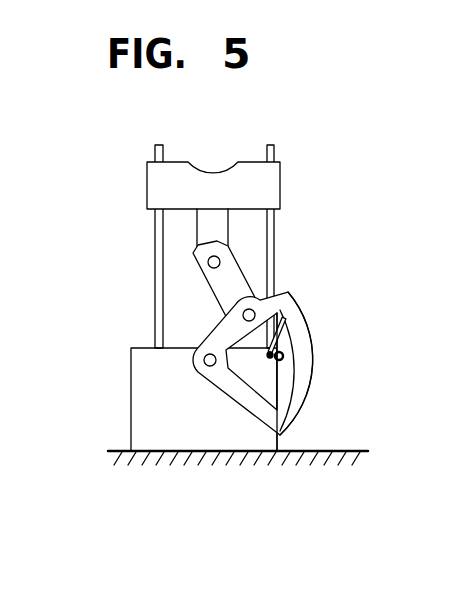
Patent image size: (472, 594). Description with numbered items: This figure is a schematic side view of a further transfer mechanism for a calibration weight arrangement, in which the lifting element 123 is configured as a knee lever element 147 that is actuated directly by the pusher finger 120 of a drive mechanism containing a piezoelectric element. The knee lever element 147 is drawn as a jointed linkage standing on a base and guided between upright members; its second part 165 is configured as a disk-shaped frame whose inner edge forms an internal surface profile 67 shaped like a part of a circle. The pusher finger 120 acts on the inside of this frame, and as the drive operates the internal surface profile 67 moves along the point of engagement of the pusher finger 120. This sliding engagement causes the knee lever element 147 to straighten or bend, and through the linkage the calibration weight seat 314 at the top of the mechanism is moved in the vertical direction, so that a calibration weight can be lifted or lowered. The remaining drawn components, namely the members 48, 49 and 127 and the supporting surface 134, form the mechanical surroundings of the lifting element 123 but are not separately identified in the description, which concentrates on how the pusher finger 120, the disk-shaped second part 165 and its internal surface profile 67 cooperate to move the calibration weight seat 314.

The calibration weight seat 314 is at (258, 182).
The actuating stem 48 is at (217, 225).
The lifting element 123 is at (258, 308).
The guide rod 127 is at (160, 243).
The knee lever element 147 is at (298, 290).
The link 49 is at (225, 281).
The pusher finger 120 is at (283, 328).
The second part of the knee lever element 165 is at (302, 368).
The base surface 134 is at (343, 460).
The internal surface profile 67 is at (278, 406).